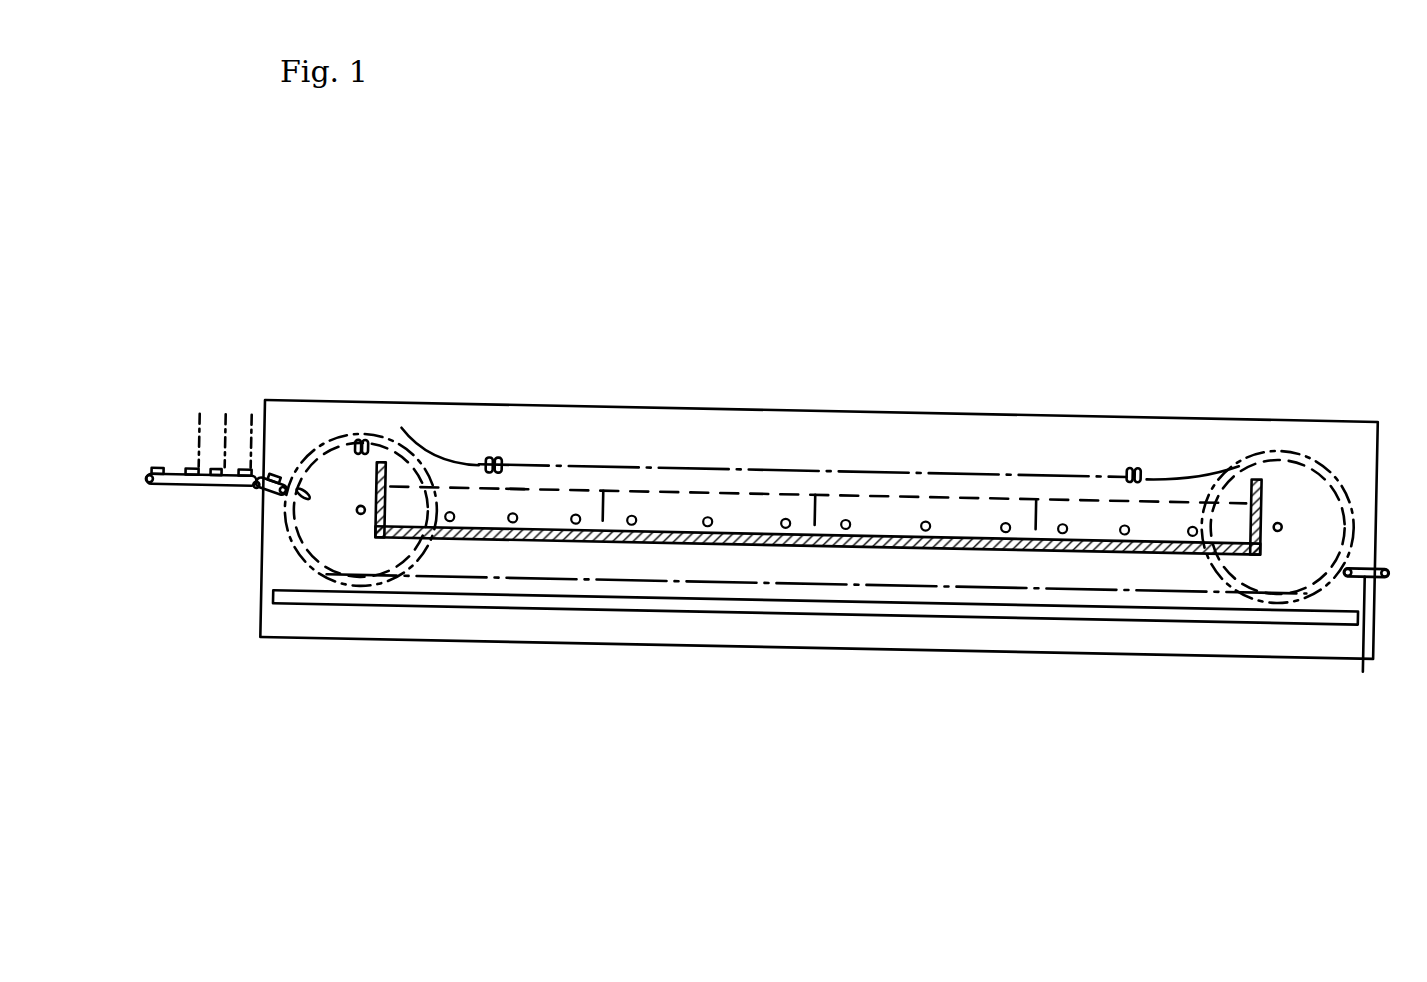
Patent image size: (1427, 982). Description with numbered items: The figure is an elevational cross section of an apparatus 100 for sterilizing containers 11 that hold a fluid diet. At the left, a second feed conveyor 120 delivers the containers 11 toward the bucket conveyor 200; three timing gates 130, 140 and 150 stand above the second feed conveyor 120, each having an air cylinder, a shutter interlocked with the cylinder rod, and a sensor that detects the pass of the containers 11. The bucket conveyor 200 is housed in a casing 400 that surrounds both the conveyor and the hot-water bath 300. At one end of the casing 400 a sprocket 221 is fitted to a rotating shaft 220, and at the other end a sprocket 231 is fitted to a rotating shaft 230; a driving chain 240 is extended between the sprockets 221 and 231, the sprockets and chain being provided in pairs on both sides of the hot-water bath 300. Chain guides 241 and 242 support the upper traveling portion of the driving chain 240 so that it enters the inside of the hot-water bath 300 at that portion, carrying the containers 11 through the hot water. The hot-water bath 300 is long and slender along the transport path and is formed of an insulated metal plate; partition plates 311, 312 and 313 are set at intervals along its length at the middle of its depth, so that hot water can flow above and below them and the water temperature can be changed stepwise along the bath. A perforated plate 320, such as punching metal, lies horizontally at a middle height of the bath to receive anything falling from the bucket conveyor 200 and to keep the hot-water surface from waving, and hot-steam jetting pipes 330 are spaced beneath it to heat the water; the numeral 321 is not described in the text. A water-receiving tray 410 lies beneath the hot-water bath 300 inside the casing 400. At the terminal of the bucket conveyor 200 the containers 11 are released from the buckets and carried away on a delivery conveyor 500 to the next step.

The apparatus 100 is at (370, 347).
The container 11 is at (150, 476).
The second feed conveyor 120 is at (196, 489).
The timing gate 130 is at (199, 421).
The timing gate 140 is at (226, 420).
The timing gate 150 is at (252, 418).
The bucket conveyor 200 is at (1283, 450).
The rotating shaft 220 is at (364, 514).
The sprocket 221 is at (326, 572).
The rotating shaft 230 is at (1280, 531).
The sprocket 231 is at (1328, 580).
The driving chain 240 is at (628, 465).
The chain guide 241 is at (430, 455).
The chain guide 242 is at (1150, 469).
The hot-water bath 300 is at (879, 552).
The partition plate 311 is at (603, 489).
The partition plate 312 is at (814, 490).
The partition plate 313 is at (1036, 515).
The perforated plate 320 is at (702, 488).
The heater plate section 321 is at (518, 486).
The hot-steam jetting pipe 330 is at (710, 526).
The casing 400 is at (263, 576).
The water-receiving tray 410 is at (490, 607).
The delivery conveyor 500 is at (1370, 662).